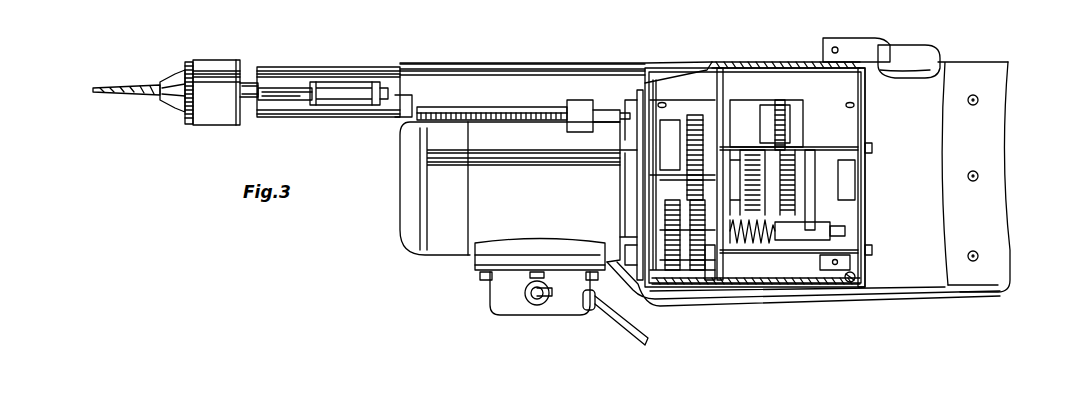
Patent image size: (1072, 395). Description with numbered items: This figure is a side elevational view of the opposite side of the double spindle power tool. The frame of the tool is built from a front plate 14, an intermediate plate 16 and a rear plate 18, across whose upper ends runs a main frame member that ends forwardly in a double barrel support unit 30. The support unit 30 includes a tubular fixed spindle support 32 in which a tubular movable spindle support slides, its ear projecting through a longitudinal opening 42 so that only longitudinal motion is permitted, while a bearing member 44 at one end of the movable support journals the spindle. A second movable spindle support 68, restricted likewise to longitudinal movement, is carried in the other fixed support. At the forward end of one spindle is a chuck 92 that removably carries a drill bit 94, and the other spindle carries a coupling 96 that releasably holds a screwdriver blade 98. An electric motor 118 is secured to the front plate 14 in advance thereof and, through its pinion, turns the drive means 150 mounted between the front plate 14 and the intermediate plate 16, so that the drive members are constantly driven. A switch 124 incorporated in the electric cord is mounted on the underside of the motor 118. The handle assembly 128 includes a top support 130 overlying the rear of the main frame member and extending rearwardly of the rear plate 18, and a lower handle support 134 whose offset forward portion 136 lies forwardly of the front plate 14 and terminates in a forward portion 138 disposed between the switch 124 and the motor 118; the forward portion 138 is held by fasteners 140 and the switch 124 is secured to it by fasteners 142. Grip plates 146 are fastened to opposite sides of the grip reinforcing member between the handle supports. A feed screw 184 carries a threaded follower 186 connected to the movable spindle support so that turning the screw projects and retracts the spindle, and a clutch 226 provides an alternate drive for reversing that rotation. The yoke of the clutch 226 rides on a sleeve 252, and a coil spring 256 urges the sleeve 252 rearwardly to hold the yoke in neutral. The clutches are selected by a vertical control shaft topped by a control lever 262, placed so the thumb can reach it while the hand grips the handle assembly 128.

The front plate 14 is at (648, 120).
The intermediate plate 16 is at (718, 276).
The rear plate 18 is at (866, 128).
The double barrel support unit 30 is at (509, 57).
The fixed spindle support 32 is at (408, 108).
The longitudinal opening 42 is at (468, 108).
The bearing member 44 is at (395, 64).
The movable spindle support 68 is at (300, 70).
The chuck 92 is at (229, 116).
The drill bit 94 is at (138, 96).
The coupling 96 is at (348, 99).
The screwdriver blade 98 is at (290, 100).
The electric motor 118 is at (455, 247).
The switch 124 is at (525, 308).
The handle assembly 128 is at (1022, 79).
The top support 130 is at (950, 62).
The lower handle support 134 is at (800, 298).
The offset forward portion 136 is at (625, 295).
The forward portion 138 is at (518, 268).
The fasteners 140 is at (485, 282).
The fasteners 142 is at (523, 288).
The grip plates 146 is at (1003, 165).
The drive means 150 is at (697, 257).
The feed screw 184 is at (510, 115).
The follower 186 is at (577, 110).
The clutch 226 is at (840, 205).
The sleeve 252 is at (800, 238).
The coil spring 256 is at (745, 241).
The control lever 262 is at (898, 58).